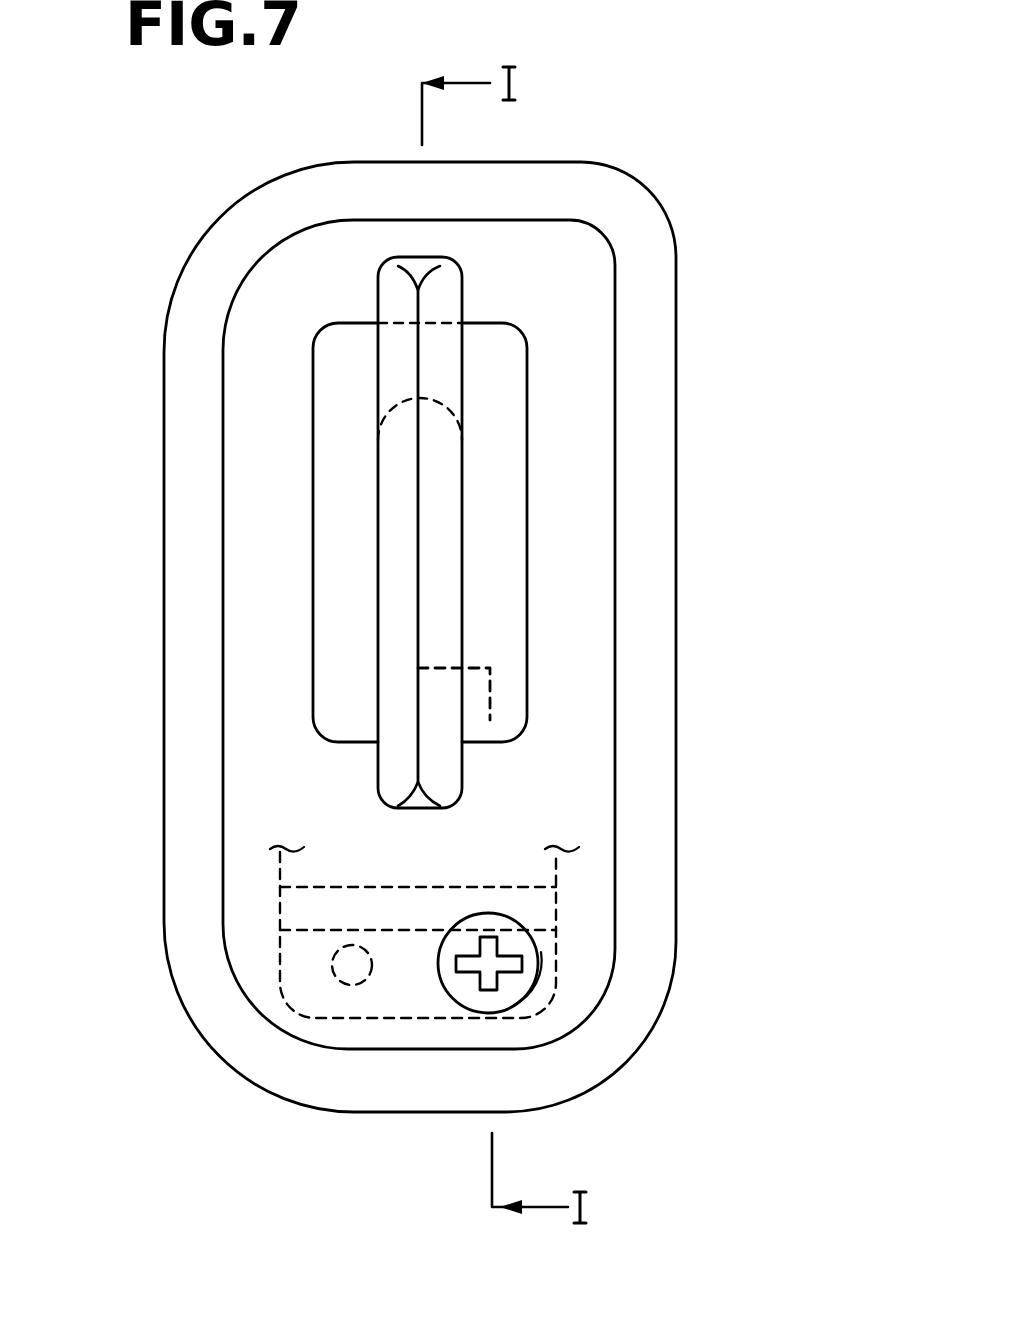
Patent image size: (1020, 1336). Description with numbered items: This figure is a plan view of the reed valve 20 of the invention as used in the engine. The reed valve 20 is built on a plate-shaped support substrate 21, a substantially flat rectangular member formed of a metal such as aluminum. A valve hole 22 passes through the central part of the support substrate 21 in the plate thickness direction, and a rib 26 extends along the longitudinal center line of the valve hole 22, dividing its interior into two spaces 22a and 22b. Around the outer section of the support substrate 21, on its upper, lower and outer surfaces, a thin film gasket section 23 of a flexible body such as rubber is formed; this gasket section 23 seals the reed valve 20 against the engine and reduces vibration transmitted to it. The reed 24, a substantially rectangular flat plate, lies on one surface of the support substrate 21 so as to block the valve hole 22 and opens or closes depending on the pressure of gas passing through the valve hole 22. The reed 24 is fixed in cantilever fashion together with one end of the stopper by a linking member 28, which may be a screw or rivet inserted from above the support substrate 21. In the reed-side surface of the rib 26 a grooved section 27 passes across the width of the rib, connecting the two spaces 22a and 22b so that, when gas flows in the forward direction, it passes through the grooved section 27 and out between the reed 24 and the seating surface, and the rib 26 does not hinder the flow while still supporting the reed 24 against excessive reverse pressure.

The reed valve 20 is at (457, 597).
The support substrate 21 is at (253, 683).
The valve hole 22 is at (576, 536).
The space 22a is at (505, 715).
The space 22b is at (350, 718).
The gasket section 23 is at (645, 955).
The reed 24 is at (512, 558).
The rib 26 is at (445, 493).
The grooved section 27 is at (443, 356).
The linking member 28 is at (513, 985).